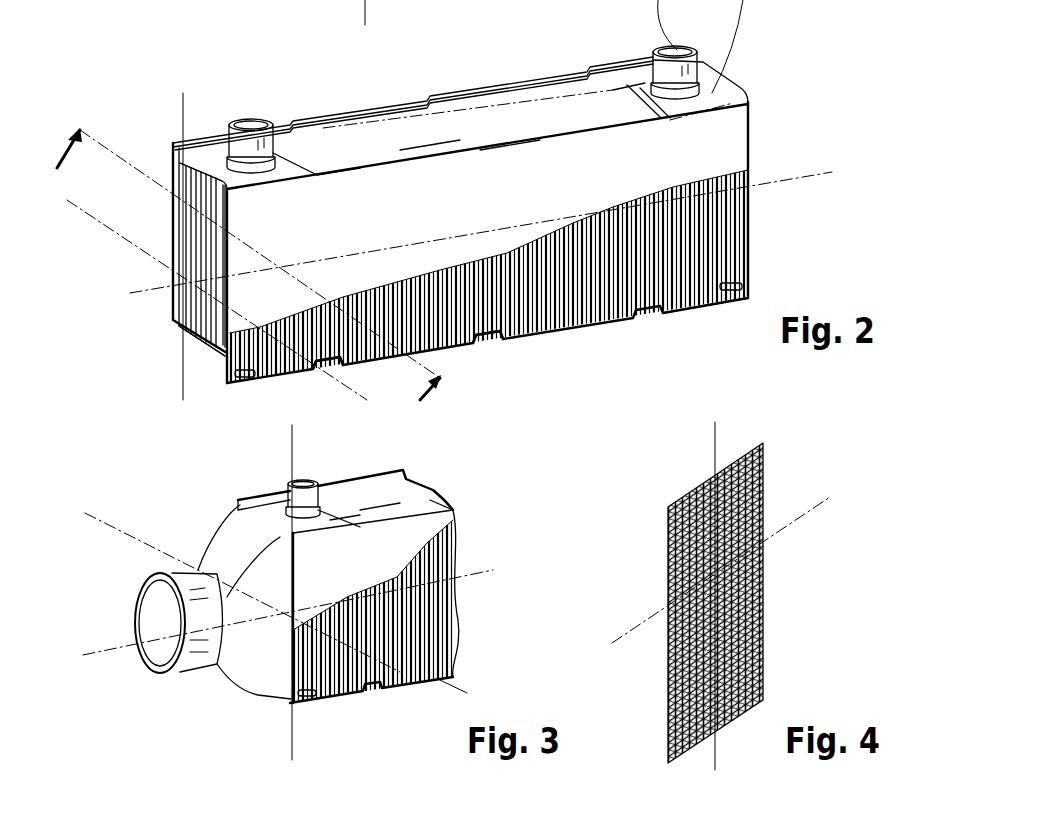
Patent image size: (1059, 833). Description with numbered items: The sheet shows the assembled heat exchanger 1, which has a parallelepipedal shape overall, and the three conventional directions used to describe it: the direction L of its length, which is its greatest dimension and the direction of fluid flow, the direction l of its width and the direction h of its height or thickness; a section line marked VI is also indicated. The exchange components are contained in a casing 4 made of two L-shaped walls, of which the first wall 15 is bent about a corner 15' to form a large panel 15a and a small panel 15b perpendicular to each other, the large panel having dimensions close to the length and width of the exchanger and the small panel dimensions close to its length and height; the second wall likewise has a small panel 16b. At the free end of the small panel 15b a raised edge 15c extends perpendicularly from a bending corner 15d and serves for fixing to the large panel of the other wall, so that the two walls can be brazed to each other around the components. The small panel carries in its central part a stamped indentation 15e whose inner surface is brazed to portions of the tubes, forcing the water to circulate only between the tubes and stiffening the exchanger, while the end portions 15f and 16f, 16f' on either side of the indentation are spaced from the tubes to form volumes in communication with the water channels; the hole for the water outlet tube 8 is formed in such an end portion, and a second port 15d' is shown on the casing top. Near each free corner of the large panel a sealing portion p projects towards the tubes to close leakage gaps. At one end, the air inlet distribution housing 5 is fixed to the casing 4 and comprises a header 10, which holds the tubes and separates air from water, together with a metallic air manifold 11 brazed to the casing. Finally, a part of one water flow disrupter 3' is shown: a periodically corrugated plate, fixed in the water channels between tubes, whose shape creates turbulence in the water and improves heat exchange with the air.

In FIG. 3, the heat exchanger 1 is at (339, 586).
In FIG. 4, the water flow disrupter 3' is at (764, 603).
In FIG. 2, the casing 4 is at (444, 205).
In FIG. 3, the air inlet distribution housing 5 is at (245, 700).
In FIG. 2, the water outlet tube 8 is at (255, 140).
In FIG. 2, the header plate 10 is at (188, 332).
In FIG. 3, the air manifold 11 is at (223, 543).
In FIG. 2, the first wall 15 is at (487, 284).
In FIG. 2, the large panel 15a is at (535, 313).
In FIG. 3, the large panel 15a is at (395, 687).
In FIG. 2, the small panel 15b is at (423, 147).
In FIG. 3, the small panel 15b is at (360, 503).
In FIG. 2, the raised edge 15c is at (360, 125).
In FIG. 3, the raised edge 15c is at (263, 490).
In FIG. 3, the bending corner 15d is at (420, 460).
In FIG. 2, the second port 15d' is at (645, 51).
In FIG. 2, the indentation 15e is at (337, 143).
In FIG. 3, the indentation 15e is at (342, 500).
In FIG. 2, the end portion of small panel 15f is at (212, 165).
In FIG. 3, the end portion of small panel 15f is at (277, 513).
In FIG. 2, the bending corner 15' is at (512, 91).
In FIG. 3, the bending corner 15' is at (461, 467).
In FIG. 2, the small panel 16b is at (187, 347).
In FIG. 2, the end portion of small panel 16f is at (168, 359).
In FIG. 2, the end portion of small panel 16f' is at (704, 354).
In FIG. 2, the sealing portion p is at (255, 378).
In FIG. 3, the sealing portion p is at (310, 697).
In FIG. 2, the height direction h is at (67, 200).
In FIG. 3, the height direction h is at (103, 513).
In FIG. 2, the length direction L is at (131, 293).
In FIG. 3, the length direction L is at (90, 647).
In FIG. 4, the length direction L is at (812, 497).
In FIG. 2, the width direction l is at (183, 98).
In FIG. 3, the width direction l is at (292, 432).
In FIG. 4, the width direction l is at (717, 442).
In FIG. 2, the section line VI is at (249, 268).